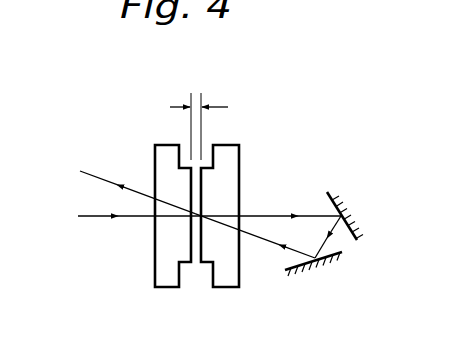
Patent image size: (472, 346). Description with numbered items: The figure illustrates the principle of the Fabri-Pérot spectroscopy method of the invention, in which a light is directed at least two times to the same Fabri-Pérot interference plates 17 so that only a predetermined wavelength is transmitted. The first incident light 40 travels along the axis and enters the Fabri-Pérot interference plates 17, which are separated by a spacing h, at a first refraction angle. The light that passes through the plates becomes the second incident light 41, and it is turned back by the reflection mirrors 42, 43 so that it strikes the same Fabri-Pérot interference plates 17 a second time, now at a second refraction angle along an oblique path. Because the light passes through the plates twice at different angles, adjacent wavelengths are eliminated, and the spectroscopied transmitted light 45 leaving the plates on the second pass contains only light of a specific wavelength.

The Fabri-Pérot interference plate 17 is at (165, 153).
The spacing h is at (199, 120).
The first incident light 40 is at (96, 218).
The second incident light 41 is at (253, 232).
The reflection mirror 42 is at (336, 200).
The reflection mirror 43 is at (338, 263).
The spectroscopied transmitted light 45 is at (100, 172).